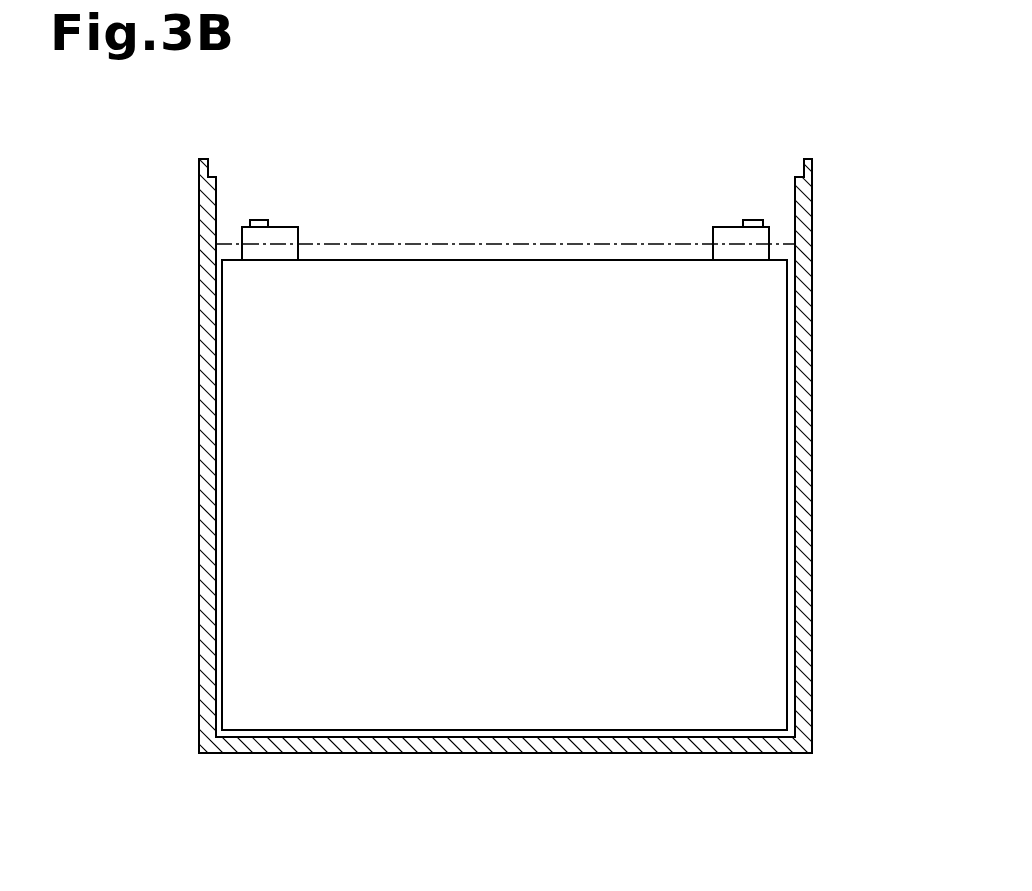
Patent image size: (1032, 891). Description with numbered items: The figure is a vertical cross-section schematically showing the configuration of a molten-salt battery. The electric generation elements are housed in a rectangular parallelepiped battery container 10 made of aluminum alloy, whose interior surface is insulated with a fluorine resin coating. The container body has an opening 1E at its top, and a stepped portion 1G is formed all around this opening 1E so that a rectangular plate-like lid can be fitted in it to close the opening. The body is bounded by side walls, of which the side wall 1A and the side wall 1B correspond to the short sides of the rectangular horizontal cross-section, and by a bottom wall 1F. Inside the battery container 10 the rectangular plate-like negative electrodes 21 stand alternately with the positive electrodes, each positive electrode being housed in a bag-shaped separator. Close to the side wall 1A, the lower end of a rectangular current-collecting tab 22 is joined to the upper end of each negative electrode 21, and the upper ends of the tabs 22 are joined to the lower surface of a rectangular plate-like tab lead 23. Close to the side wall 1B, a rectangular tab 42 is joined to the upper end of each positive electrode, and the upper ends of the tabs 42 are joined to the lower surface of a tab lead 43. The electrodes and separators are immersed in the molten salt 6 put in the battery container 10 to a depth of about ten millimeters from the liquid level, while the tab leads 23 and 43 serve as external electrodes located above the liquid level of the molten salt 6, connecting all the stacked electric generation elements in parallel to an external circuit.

The battery container 10 is at (614, 757).
The side wall 1A is at (804, 253).
The side wall 1B is at (207, 252).
The opening 1E is at (560, 194).
The bottom wall 1F is at (688, 757).
The stepped portion 1G is at (209, 176).
The molten salt 6 is at (466, 243).
The negative electrode 21 is at (470, 693).
The tab 22 is at (718, 232).
The tab lead 23 is at (752, 220).
The tab 42 is at (286, 232).
The tab lead 43 is at (258, 220).